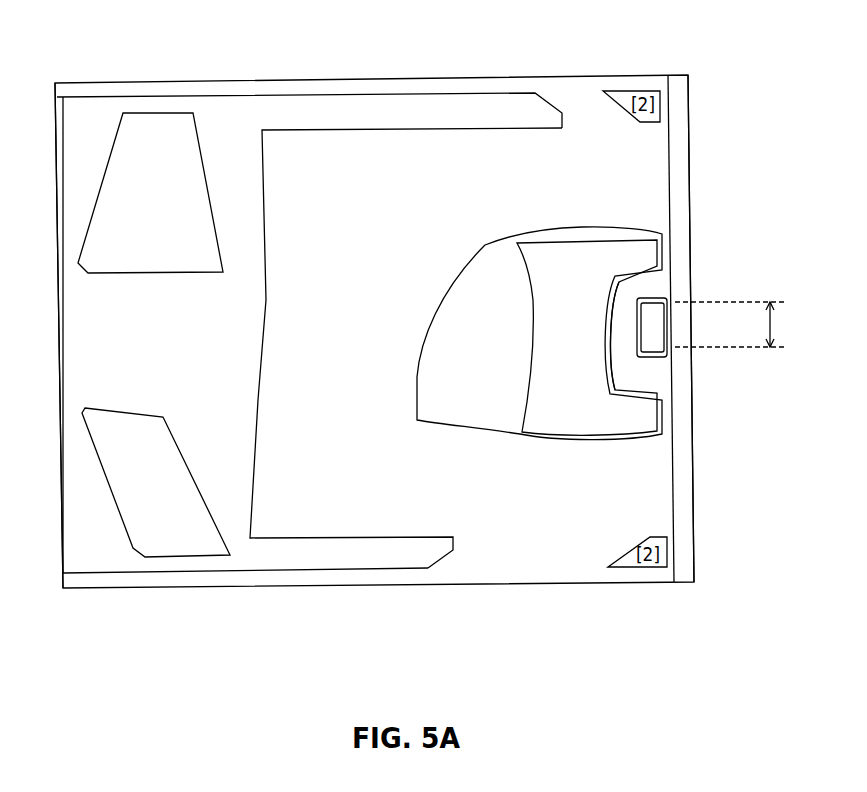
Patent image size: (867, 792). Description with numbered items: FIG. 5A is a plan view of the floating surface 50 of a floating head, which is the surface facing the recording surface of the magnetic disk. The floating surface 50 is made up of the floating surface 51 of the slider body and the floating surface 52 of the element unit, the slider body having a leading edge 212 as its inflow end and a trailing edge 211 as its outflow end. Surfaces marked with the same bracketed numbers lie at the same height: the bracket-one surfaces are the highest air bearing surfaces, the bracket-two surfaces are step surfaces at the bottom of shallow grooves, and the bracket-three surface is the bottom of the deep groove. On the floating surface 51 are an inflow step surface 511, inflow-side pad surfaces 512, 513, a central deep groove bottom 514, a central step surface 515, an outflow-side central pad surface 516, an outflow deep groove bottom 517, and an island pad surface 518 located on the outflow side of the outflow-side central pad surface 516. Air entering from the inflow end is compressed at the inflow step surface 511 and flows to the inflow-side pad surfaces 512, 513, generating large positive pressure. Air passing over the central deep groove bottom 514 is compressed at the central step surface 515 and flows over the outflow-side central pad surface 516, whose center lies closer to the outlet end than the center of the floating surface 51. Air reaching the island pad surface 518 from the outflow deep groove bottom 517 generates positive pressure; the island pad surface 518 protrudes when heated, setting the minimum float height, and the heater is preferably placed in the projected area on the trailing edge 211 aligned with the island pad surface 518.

The floating surface 50 is at (320, 47).
The floating surface of the slider body 51 is at (350, 463).
The floating surface of the element unit 52 is at (677, 111).
The trailing edge 211 is at (667, 213).
The leading edge 212 is at (60, 322).
The inflow step surface 511 is at (143, 347).
The inflow-side pad surface 512 is at (173, 164).
The inflow-side pad surface 513 is at (173, 521).
The central deep groove bottom 514 is at (358, 371).
The central step surface 515 is at (498, 389).
The outflow-side central pad surface 516 is at (585, 377).
The outflow deep groove bottom 517 is at (633, 367).
The island pad surface 518 is at (712, 323).